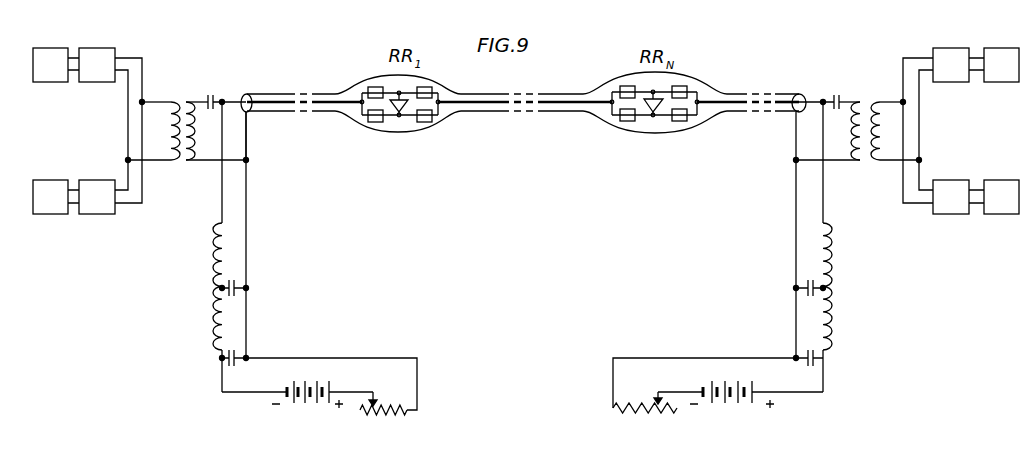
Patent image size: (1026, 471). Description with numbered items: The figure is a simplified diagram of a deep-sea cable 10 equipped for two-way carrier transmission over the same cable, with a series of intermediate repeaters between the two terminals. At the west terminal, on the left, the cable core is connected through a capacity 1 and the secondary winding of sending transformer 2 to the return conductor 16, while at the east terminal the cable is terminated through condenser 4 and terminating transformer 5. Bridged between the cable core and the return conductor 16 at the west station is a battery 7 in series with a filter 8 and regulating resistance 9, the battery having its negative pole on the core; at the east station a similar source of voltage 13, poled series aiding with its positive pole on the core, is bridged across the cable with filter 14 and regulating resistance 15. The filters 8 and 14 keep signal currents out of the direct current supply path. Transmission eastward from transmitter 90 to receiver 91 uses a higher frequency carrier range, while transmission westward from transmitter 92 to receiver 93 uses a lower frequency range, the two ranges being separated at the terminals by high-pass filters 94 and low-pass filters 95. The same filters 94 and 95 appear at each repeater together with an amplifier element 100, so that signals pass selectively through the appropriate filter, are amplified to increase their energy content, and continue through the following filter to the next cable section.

The capacity 1 is at (214, 96).
The sending transformer 2 is at (181, 101).
The condenser 4 is at (839, 96).
The terminating transformer 5 is at (862, 98).
The battery 7 is at (299, 404).
The filter 8 is at (213, 289).
The regulating resistance 9 is at (376, 413).
The cable 10 is at (322, 94).
The source of voltage 13 is at (728, 402).
The filter 14 is at (832, 289).
The regulating resistance 15 is at (638, 413).
The return conductor 16 is at (248, 113).
The transmitter 90 is at (50, 53).
The receiver 91 is at (999, 53).
The transmitter 92 is at (1003, 210).
The receiver 93 is at (52, 210).
The high-pass filter 94 is at (99, 53).
The low-pass filter 95 is at (100, 210).
The amplifier element 100 is at (402, 117).